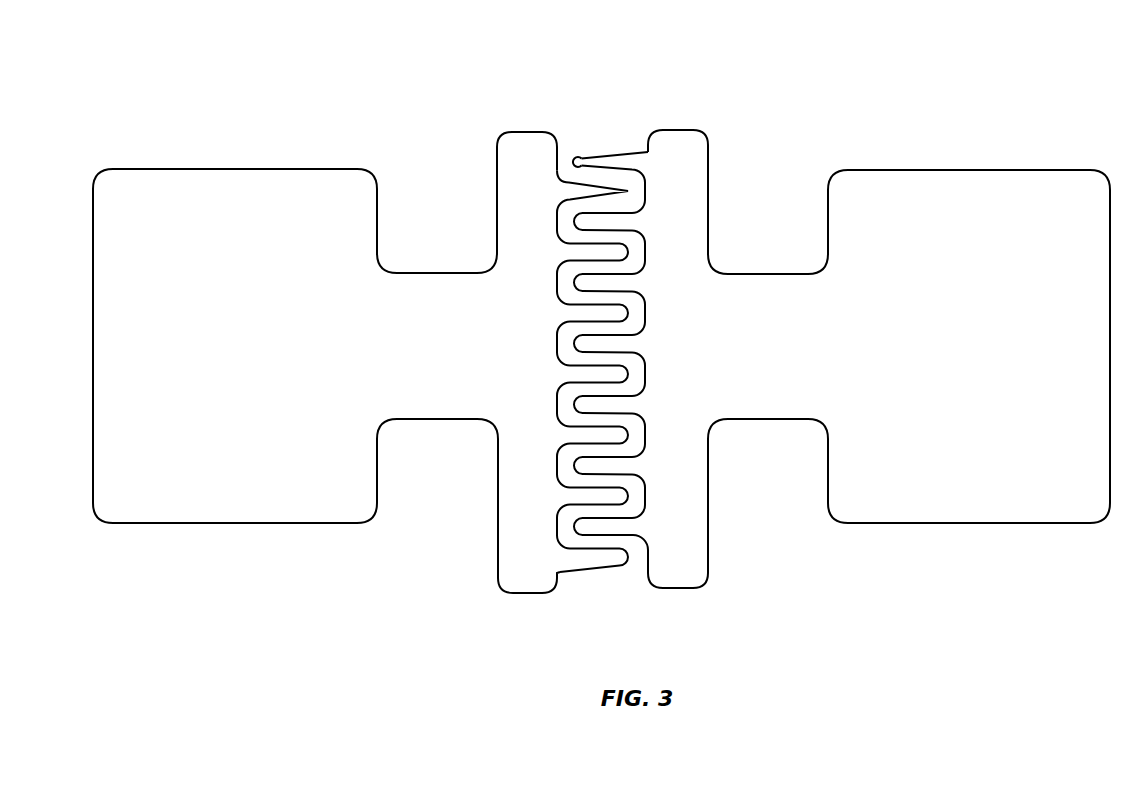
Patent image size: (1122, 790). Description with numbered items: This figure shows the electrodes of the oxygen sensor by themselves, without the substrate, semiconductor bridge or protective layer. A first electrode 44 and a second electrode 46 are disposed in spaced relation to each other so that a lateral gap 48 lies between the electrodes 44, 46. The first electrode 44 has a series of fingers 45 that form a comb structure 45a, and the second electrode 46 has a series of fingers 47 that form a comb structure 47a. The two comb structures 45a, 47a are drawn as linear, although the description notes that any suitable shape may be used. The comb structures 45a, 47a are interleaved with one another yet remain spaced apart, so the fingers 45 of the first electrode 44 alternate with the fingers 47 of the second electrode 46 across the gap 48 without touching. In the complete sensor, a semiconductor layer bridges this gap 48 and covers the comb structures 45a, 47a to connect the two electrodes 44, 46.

The first electrode 44 is at (522, 131).
The fingers 45 is at (587, 192).
The second electrode 46 is at (672, 129).
The fingers 47 is at (623, 151).
The lateral gap 48 is at (636, 560).
The comb structure 45a is at (547, 311).
The comb structure 47a is at (663, 320).